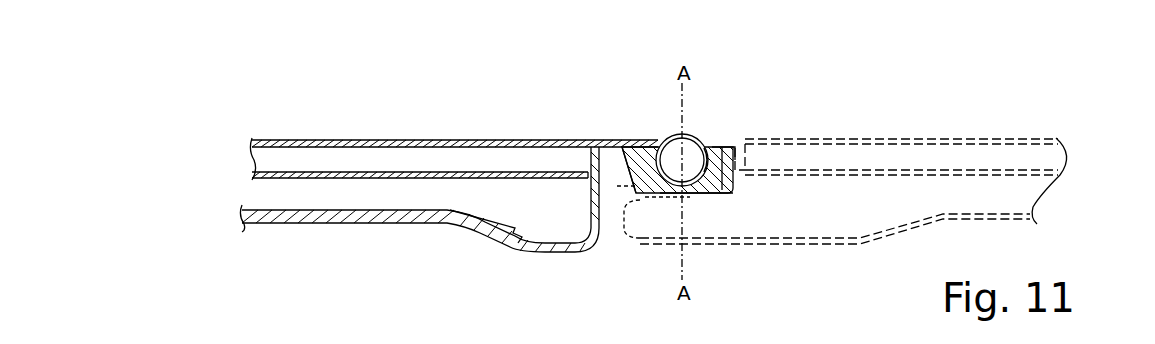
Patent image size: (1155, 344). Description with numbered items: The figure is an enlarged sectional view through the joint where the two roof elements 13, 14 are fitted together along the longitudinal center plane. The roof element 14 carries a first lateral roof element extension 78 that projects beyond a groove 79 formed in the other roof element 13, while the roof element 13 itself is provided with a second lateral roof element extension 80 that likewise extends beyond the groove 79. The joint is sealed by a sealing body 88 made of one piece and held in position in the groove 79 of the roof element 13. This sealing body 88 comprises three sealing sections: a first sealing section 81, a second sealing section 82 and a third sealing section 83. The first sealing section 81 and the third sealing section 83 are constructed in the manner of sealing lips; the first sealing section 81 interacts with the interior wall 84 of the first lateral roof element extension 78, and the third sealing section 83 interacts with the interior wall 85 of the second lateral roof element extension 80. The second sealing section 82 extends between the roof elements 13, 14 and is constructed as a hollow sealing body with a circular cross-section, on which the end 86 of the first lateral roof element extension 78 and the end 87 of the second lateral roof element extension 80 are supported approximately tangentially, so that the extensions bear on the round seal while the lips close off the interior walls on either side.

The roof element 13 is at (912, 139).
The roof element 14 is at (325, 139).
The first lateral roof element extension 78 is at (652, 137).
The groove 79 is at (644, 200).
The second lateral roof element extension 80 is at (724, 138).
The first sealing section 81 is at (620, 158).
The second sealing section 82 is at (693, 140).
The third sealing section 83 is at (727, 197).
The interior wall 84 is at (617, 187).
The interior wall 85 is at (700, 194).
The end 86 is at (672, 137).
The end 87 is at (697, 143).
The sealing body 88 is at (652, 194).